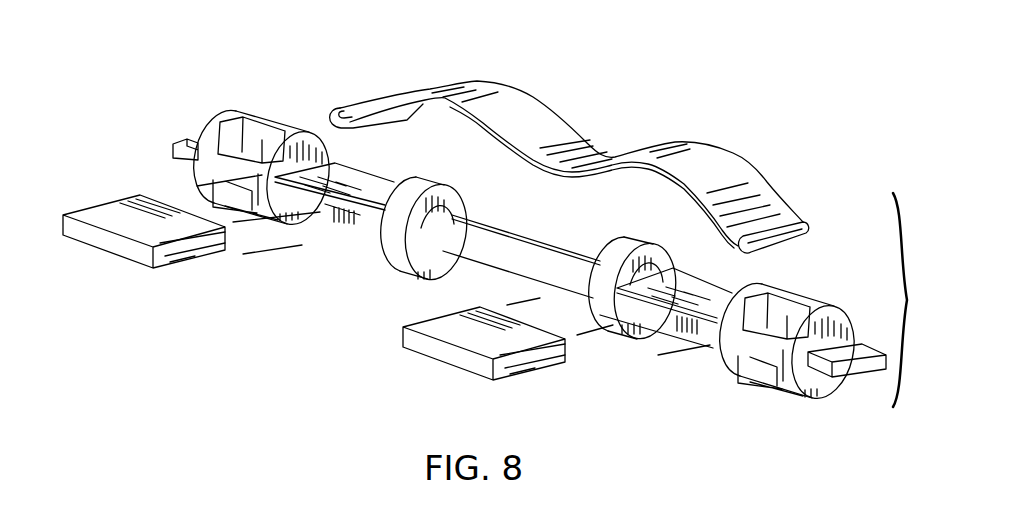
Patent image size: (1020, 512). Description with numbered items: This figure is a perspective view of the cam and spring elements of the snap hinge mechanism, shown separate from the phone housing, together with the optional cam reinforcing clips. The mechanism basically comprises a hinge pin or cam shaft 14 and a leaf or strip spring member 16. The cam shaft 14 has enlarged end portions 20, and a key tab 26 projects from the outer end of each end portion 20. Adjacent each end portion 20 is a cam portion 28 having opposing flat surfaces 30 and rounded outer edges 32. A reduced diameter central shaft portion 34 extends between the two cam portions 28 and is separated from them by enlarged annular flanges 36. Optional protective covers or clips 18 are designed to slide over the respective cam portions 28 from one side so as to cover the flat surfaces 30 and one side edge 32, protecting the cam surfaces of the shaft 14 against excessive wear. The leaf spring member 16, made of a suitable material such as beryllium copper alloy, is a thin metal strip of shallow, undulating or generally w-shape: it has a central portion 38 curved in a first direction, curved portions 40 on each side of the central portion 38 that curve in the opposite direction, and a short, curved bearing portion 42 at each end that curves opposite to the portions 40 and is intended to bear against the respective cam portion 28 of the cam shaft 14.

The hinge pin or cam shaft 14 is at (468, 284).
The leaf or strip spring member 16 is at (712, 131).
The protective covers or clips 18 is at (115, 251).
The enlarged end portions 20 is at (243, 112).
The key tab 26 is at (173, 148).
The cam portion 28 is at (327, 203).
The flat surfaces 30 is at (347, 202).
The rounded outer edges 32 is at (323, 207).
The central shaft portion 34 is at (490, 238).
The enlarged annular flanges 36 is at (420, 181).
The central portion 38 is at (550, 163).
The curved portions 40 is at (473, 82).
The curved bearing portion 42 is at (352, 108).